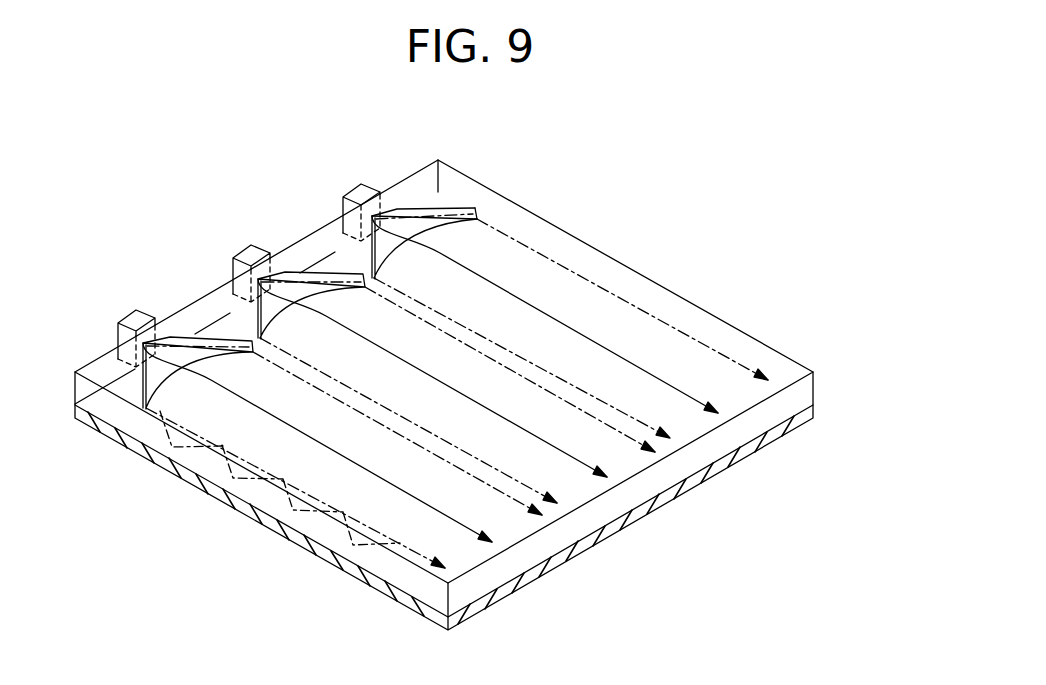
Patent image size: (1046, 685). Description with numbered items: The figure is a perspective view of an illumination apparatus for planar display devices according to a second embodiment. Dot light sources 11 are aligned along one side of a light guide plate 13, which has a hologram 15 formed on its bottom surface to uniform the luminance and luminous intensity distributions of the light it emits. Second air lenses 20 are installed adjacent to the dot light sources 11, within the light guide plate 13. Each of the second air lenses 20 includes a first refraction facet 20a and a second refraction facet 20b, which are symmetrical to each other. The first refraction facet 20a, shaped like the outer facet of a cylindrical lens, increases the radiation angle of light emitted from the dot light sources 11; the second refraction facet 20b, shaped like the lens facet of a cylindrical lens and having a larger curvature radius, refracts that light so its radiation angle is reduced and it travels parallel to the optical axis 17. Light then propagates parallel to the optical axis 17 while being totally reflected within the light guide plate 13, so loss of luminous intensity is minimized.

The dot light sources 11 is at (120, 322).
The light guide plate 13 is at (805, 395).
The hologram 15 is at (803, 417).
The optical axis 17 is at (577, 458).
The second air lenses 20 is at (352, 257).
The first refraction facet 20a is at (373, 215).
The second refraction facet 20b is at (474, 217).